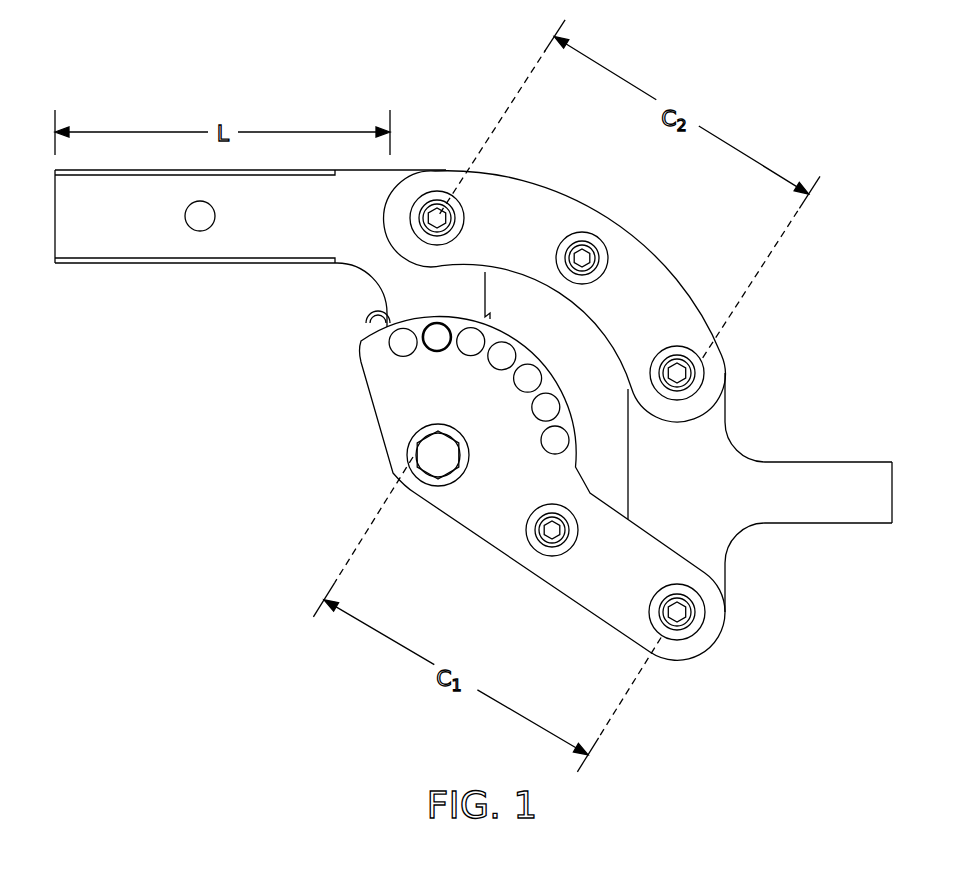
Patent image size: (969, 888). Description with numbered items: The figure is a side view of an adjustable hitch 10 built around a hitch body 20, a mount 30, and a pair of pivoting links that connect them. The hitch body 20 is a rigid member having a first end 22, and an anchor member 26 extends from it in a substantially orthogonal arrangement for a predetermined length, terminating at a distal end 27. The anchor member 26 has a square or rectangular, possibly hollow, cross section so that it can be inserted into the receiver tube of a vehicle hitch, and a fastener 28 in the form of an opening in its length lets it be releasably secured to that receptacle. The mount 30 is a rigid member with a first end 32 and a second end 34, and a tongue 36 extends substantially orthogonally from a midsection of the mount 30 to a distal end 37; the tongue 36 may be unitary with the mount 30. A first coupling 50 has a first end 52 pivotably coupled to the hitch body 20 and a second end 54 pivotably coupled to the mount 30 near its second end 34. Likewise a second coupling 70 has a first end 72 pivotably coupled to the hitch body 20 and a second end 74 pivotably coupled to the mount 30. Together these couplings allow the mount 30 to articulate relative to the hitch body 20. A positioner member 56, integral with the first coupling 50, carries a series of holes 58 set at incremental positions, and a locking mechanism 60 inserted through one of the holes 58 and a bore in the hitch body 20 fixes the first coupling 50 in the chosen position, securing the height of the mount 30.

The adjustable hitch 10 is at (388, 76).
The hitch body 20 is at (251, 243).
The first end 22 is at (392, 190).
The anchor member 26 is at (275, 243).
The distal end 27 is at (55, 237).
The fastener 28 is at (200, 231).
The mount 30 is at (783, 491).
The first end 32 is at (703, 428).
The second end 34 is at (703, 560).
The tongue 36 is at (851, 478).
The distal end 37 is at (893, 492).
The first coupling 50 is at (535, 491).
The first end 52 is at (440, 500).
The second end 54 is at (693, 643).
The positioner member 56 is at (462, 388).
The holes 58 is at (550, 407).
The locking mechanism 60 is at (438, 337).
The second coupling 70 is at (580, 270).
The first end 72 is at (455, 190).
The second end 74 is at (715, 360).